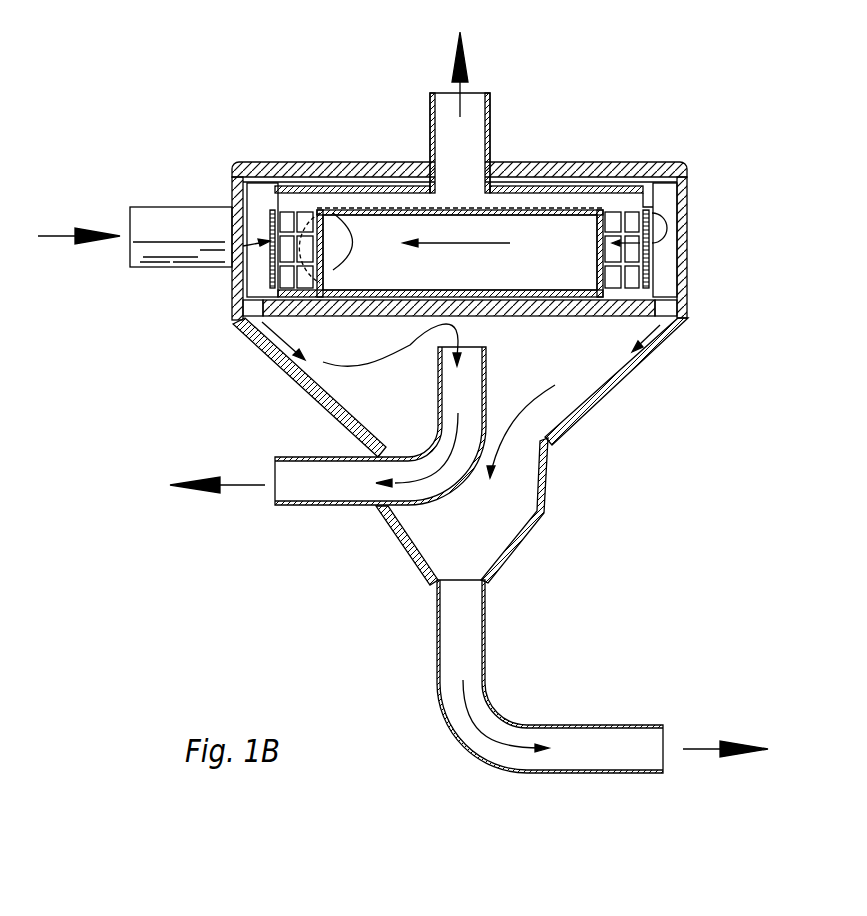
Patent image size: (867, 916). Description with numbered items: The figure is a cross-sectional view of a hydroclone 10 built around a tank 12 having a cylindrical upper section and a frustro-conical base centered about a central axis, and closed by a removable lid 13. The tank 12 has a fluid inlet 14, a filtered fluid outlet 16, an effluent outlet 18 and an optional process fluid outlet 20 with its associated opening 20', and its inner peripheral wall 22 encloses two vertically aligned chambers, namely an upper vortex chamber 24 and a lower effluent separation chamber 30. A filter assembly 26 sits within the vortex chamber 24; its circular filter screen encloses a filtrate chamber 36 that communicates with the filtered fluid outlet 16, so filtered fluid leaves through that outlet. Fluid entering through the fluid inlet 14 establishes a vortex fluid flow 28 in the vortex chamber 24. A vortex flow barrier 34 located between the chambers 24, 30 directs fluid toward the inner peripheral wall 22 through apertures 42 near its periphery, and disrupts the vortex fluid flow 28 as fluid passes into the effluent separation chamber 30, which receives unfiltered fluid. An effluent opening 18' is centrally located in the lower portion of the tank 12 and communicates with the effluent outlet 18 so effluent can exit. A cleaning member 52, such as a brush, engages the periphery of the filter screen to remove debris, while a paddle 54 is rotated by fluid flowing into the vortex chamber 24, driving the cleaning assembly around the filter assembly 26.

The hydroclone 10 is at (150, 48).
The tank 12 is at (570, 426).
The removable lid 13 is at (342, 162).
The fluid inlet 14 is at (196, 207).
The filtered fluid outlet 16 is at (490, 120).
The effluent outlet 18 is at (602, 676).
The effluent opening 18' is at (528, 566).
The process fluid outlet 20 is at (328, 454).
The second outlet opening 20' is at (298, 393).
The inner peripheral wall 22 is at (367, 385).
The vortex chamber 24 is at (665, 203).
The filter assembly 26 is at (600, 215).
The vortex fluid flow 28 is at (440, 240).
The effluent separation chamber 30 is at (560, 402).
The vortex flow barrier 34 is at (283, 320).
The filtrate chamber 36 is at (553, 230).
The apertures 42 is at (660, 326).
The cleaning member 52 is at (650, 238).
The paddle 54 is at (665, 263).